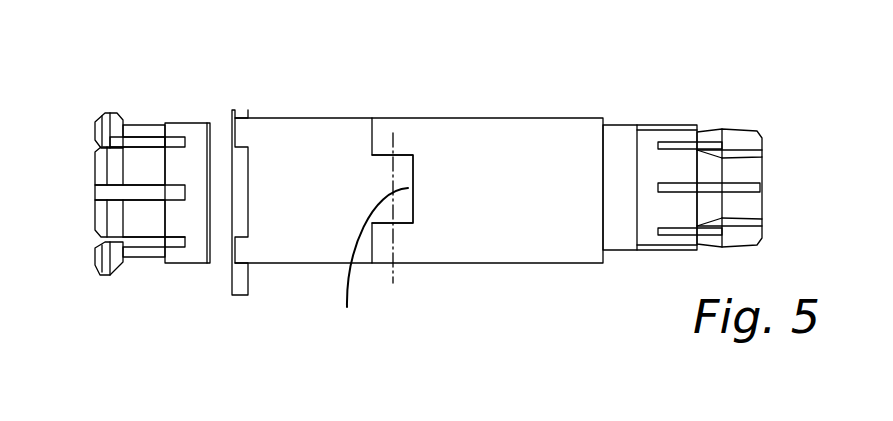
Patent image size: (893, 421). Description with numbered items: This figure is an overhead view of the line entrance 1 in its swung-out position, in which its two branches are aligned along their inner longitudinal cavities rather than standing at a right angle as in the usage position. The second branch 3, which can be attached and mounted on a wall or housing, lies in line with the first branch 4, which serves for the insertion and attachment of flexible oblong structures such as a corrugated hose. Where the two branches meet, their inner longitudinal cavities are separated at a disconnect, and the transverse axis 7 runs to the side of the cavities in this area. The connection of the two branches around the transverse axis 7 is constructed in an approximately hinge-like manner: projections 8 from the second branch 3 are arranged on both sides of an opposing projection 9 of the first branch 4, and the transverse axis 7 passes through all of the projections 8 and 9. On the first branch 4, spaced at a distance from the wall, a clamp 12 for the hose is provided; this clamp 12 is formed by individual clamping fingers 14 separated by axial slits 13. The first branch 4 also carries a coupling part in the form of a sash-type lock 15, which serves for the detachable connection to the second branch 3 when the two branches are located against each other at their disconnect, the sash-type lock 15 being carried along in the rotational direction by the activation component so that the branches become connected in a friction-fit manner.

The line entrance 1 is at (290, 308).
The second branch 3 is at (533, 208).
The first branch 4 is at (300, 208).
The transverse axis 7 is at (393, 130).
The projections 8 is at (380, 135).
The opposing projection 9 is at (364, 275).
The clamp 12 is at (140, 267).
The axial slits 13 is at (177, 130).
The clamping fingers 14 is at (137, 131).
The sash-type lock 15 is at (243, 112).